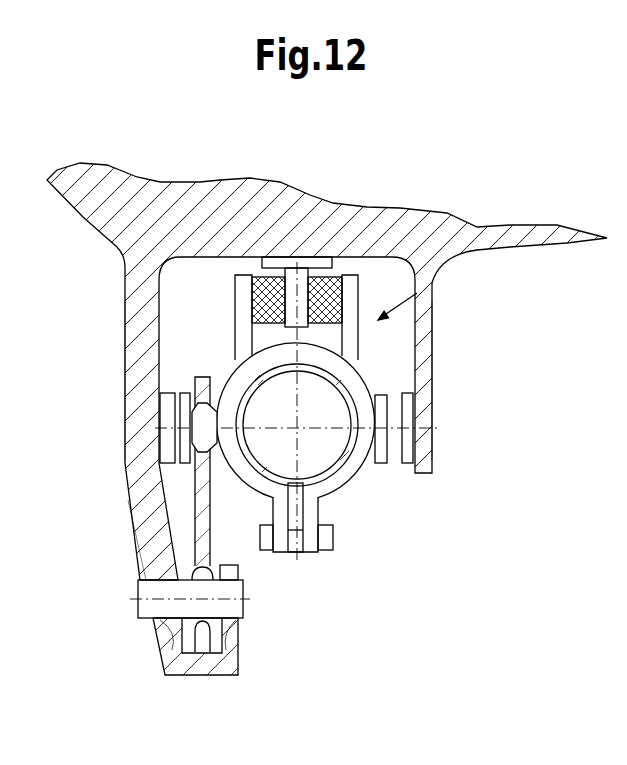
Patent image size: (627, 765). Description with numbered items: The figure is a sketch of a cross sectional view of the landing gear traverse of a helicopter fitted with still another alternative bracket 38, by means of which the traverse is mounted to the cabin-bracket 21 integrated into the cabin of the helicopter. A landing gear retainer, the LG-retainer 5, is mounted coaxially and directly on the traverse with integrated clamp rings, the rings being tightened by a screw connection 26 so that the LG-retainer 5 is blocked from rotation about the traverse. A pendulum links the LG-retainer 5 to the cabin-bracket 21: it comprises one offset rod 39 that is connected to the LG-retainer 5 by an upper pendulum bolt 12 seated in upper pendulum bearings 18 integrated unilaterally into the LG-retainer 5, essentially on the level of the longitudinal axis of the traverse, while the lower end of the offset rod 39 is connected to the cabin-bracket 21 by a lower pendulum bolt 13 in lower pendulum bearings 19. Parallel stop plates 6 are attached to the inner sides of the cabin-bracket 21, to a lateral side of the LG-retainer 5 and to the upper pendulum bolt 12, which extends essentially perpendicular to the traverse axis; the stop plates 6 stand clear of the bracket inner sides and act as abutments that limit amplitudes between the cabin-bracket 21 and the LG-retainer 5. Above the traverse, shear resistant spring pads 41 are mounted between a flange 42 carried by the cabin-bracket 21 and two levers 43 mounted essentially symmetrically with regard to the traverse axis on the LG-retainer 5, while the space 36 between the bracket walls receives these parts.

The LG-retainer 5 is at (348, 487).
The stop plates 6 is at (173, 393).
The upper pendulum bolt 12 is at (165, 442).
The lower pendulum bolt 13 is at (230, 590).
The upper pendulum bearings 18 is at (197, 385).
The lower pendulum bearings 19 is at (165, 652).
The cabin-bracket 21 is at (135, 325).
The screw connection 26 is at (313, 537).
The receiving space 36 is at (417, 293).
The alternative bracket 38 is at (422, 188).
The offset rod 39 is at (140, 533).
The shear resistant spring pads 41 is at (272, 290).
The flange 42 is at (298, 277).
The levers 43 is at (238, 292).